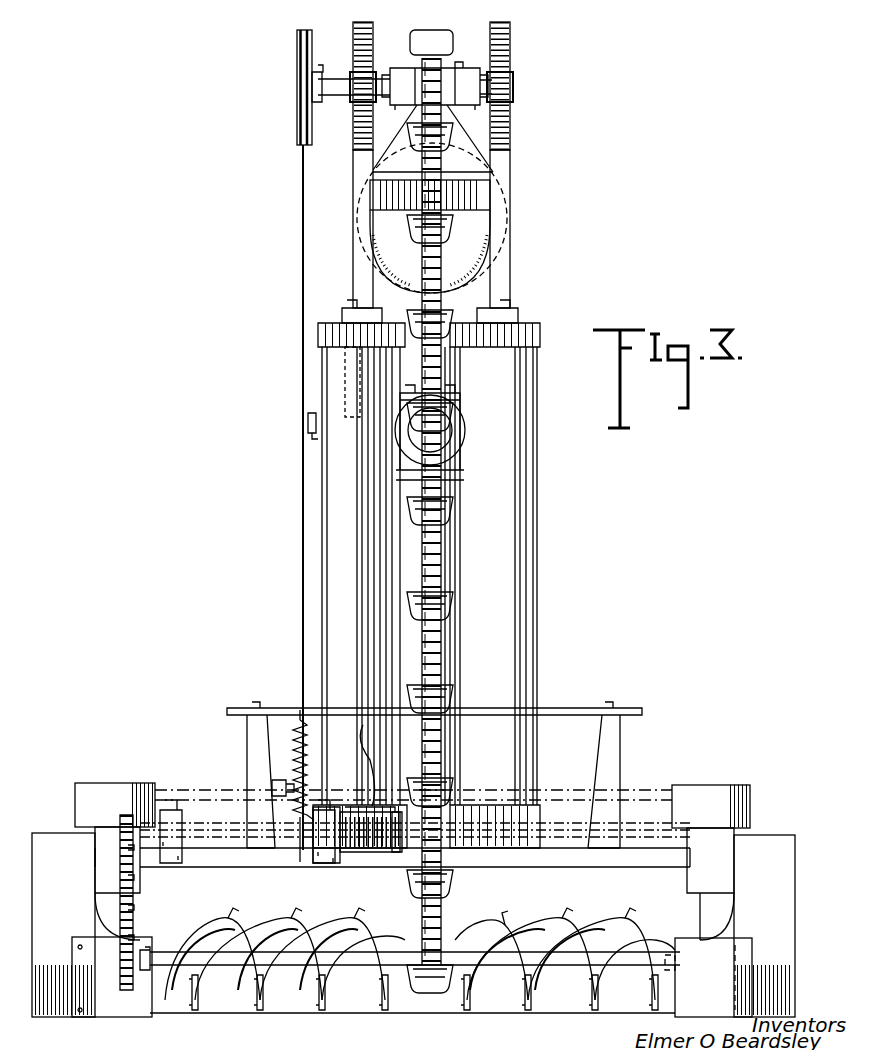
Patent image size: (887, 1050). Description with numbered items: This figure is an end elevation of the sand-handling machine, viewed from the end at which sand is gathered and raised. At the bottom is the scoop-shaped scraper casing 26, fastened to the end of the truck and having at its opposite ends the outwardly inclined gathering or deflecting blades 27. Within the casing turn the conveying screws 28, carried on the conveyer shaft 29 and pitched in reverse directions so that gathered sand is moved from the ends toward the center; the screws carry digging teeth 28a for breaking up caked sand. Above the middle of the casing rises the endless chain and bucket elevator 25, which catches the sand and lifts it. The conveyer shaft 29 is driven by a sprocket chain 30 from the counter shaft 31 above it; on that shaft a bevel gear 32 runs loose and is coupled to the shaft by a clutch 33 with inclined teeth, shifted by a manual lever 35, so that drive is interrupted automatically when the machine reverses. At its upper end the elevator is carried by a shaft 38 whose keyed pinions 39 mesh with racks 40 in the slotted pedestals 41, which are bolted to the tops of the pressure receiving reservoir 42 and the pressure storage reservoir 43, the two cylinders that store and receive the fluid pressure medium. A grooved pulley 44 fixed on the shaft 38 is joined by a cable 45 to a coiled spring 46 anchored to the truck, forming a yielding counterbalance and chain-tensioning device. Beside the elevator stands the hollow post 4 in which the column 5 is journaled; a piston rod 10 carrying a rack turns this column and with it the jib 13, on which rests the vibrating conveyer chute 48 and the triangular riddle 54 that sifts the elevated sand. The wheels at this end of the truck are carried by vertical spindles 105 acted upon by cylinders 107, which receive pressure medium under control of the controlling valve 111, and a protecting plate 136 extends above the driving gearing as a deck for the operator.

The hollow post 4 is at (442, 660).
The column 5 is at (447, 480).
The piston rod 10 is at (378, 42).
The jib 13 is at (452, 435).
The elevator 25 is at (442, 510).
The scraper casing 26 is at (640, 1015).
The gathering or deflecting blades 27 is at (108, 1000).
The conveying screws 28 is at (235, 975).
The digging teeth 28a is at (240, 935).
The conveyer shaft 29 is at (450, 968).
The sprocket chain 30 is at (135, 912).
The counter shaft 31 is at (215, 828).
The bevel gear 32 is at (355, 805).
The clutch 33 is at (357, 845).
The manual lever 35 is at (360, 730).
The shaft 38 is at (325, 78).
The pinions 39 is at (512, 98).
The racks 40 is at (505, 55).
The pedestals 41 is at (370, 225).
The pressure receiving reservoir 42 is at (497, 524).
The pressure storage reservoir 43 is at (345, 523).
The grooved pulley 44 is at (300, 110).
The cable 45 is at (303, 268).
The coiled spring 46 is at (283, 735).
The conveyer chute 48 is at (470, 268).
The riddle 54 is at (465, 148).
The vertical spindles 105 is at (118, 900).
The cylinders 107 is at (775, 800).
The controlling valve 111 is at (272, 793).
The protecting plate 136 is at (560, 710).